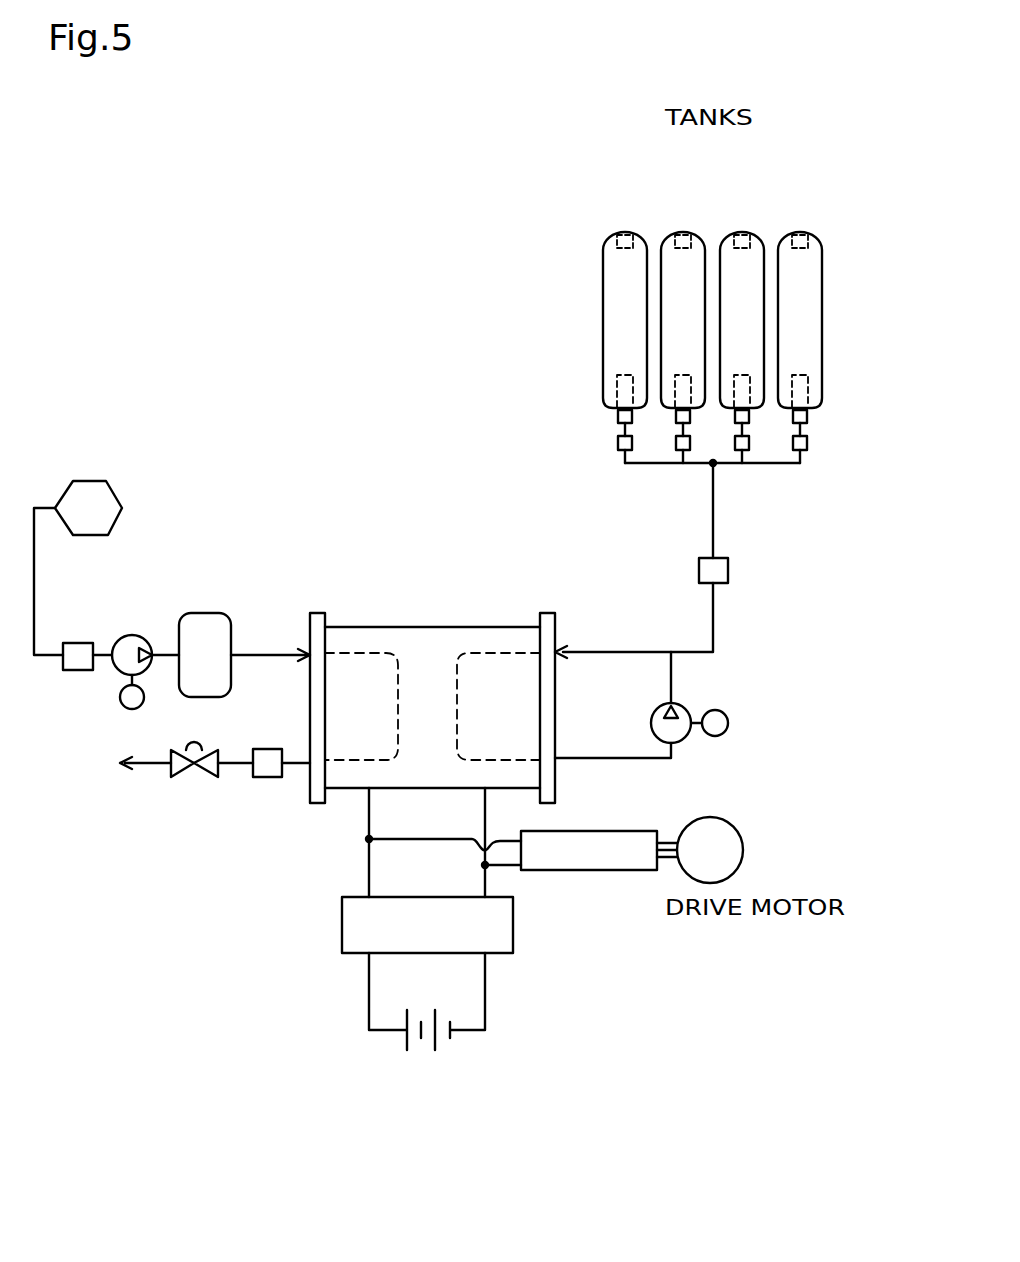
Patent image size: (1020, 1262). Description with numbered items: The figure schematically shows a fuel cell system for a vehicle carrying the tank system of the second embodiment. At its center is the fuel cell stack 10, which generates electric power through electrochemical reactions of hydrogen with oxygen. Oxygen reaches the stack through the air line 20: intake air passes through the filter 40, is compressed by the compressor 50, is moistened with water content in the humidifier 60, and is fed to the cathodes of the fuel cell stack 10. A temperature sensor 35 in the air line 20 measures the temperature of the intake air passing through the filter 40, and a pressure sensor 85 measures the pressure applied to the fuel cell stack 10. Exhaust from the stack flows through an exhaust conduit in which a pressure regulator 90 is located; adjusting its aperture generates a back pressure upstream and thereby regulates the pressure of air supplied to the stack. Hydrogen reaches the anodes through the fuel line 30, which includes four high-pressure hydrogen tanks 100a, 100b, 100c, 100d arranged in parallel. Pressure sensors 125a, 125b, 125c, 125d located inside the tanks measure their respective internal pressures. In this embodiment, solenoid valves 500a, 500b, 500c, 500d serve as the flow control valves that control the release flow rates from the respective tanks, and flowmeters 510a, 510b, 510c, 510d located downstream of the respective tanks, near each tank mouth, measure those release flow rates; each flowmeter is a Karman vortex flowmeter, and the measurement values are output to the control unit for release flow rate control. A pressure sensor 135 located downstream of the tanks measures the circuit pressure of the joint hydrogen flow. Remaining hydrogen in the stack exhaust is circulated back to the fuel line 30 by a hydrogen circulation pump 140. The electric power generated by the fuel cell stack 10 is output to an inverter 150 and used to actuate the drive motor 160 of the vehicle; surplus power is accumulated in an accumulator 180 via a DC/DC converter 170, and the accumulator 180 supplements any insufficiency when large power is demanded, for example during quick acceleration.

The fuel cell stack 10 is at (456, 618).
The air line 20 is at (277, 643).
The fuel line 30 is at (603, 633).
The temperature sensor 35 is at (78, 643).
The filter 40 is at (115, 490).
The compressor 50 is at (132, 635).
The humidifier 60 is at (206, 613).
The pressure sensor 85 is at (264, 778).
The pressure regulator 90 is at (198, 778).
The hydrogen tank 100a is at (602, 268).
The hydrogen tank 100b is at (667, 238).
The hydrogen tank 100c is at (722, 238).
The hydrogen tank 100d is at (783, 238).
The pressure sensor 125a is at (610, 237).
The pressure sensor 125b is at (683, 235).
The pressure sensor 125c is at (737, 232).
The pressure sensor 125d is at (797, 232).
The pressure sensor 135 is at (716, 584).
The hydrogen circulation pump 140 is at (656, 714).
The inverter 150 is at (580, 870).
The drive motor 160 is at (743, 848).
The DC/DC converter 170 is at (342, 930).
The accumulator 180 is at (458, 1032).
The solenoid valve 500a is at (617, 417).
The solenoid valve 500b is at (676, 419).
The solenoid valve 500c is at (735, 420).
The solenoid valve 500d is at (793, 421).
The flowmeter 510a is at (617, 443).
The flowmeter 510b is at (676, 445).
The flowmeter 510c is at (733, 447).
The flowmeter 510d is at (808, 445).